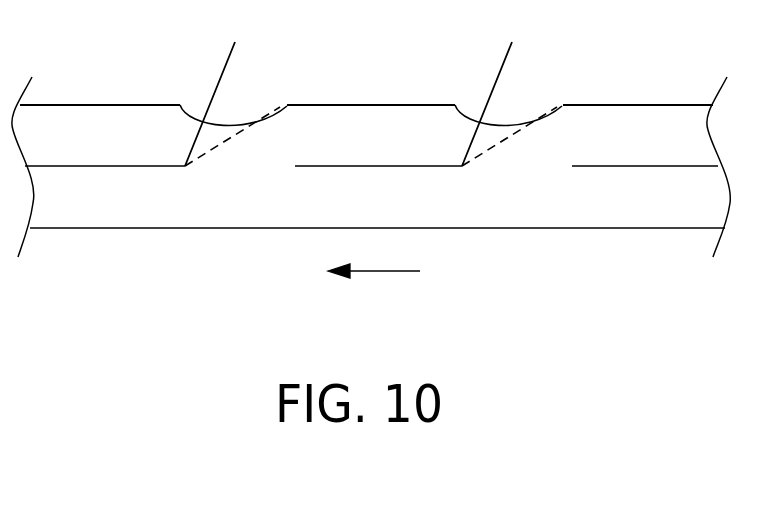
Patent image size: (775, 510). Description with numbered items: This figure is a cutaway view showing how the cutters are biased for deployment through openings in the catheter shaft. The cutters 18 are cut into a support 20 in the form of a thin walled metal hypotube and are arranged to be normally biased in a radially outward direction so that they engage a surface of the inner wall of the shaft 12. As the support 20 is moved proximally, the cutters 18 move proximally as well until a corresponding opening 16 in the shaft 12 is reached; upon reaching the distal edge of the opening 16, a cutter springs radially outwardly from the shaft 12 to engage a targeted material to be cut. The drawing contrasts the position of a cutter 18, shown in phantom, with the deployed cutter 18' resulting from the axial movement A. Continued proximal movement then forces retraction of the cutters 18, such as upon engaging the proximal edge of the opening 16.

The shaft 12 is at (100, 105).
The opening 16 is at (187, 106).
The cutter 18 is at (391, 104).
The cutter 18' is at (342, 85).
The support 20 is at (538, 228).
The axial movement A is at (377, 272).